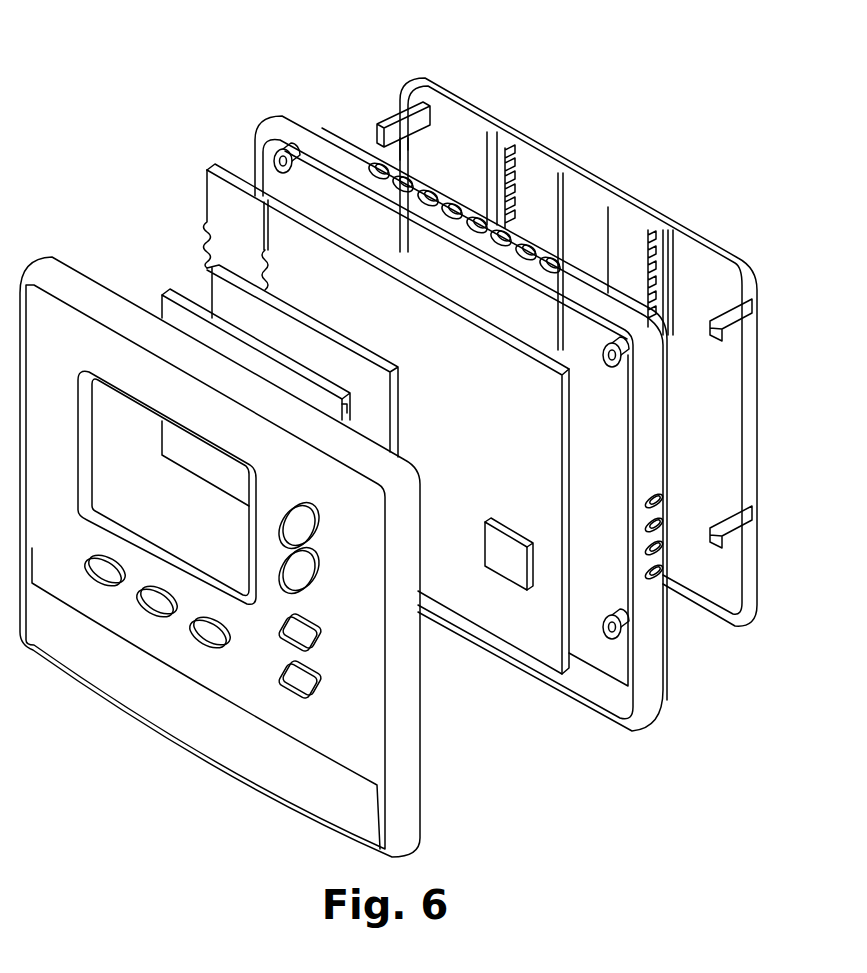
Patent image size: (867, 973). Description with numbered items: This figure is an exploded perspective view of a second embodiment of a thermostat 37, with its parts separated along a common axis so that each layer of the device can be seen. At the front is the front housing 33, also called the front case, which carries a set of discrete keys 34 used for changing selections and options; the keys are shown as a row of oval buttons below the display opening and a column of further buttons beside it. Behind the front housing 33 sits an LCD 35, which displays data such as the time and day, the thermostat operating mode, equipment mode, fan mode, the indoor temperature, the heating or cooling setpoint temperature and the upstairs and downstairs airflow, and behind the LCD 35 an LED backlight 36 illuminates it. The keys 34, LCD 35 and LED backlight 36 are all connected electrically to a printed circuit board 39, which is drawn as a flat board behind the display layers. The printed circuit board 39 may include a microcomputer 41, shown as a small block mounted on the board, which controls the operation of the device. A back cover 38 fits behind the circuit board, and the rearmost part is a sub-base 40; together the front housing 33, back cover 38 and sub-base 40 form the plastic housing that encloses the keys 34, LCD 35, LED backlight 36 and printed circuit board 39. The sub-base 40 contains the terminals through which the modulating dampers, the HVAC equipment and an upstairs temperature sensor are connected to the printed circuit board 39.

The front housing 33 is at (57, 270).
The discrete keys 34 is at (106, 566).
The LCD 35 is at (169, 290).
The LED backlight 36 is at (224, 287).
The thermostat 37 is at (113, 102).
The back cover 38 is at (280, 127).
The printed circuit board 39 is at (468, 385).
The sub-base 40 is at (575, 168).
The microcomputer 41 is at (500, 557).